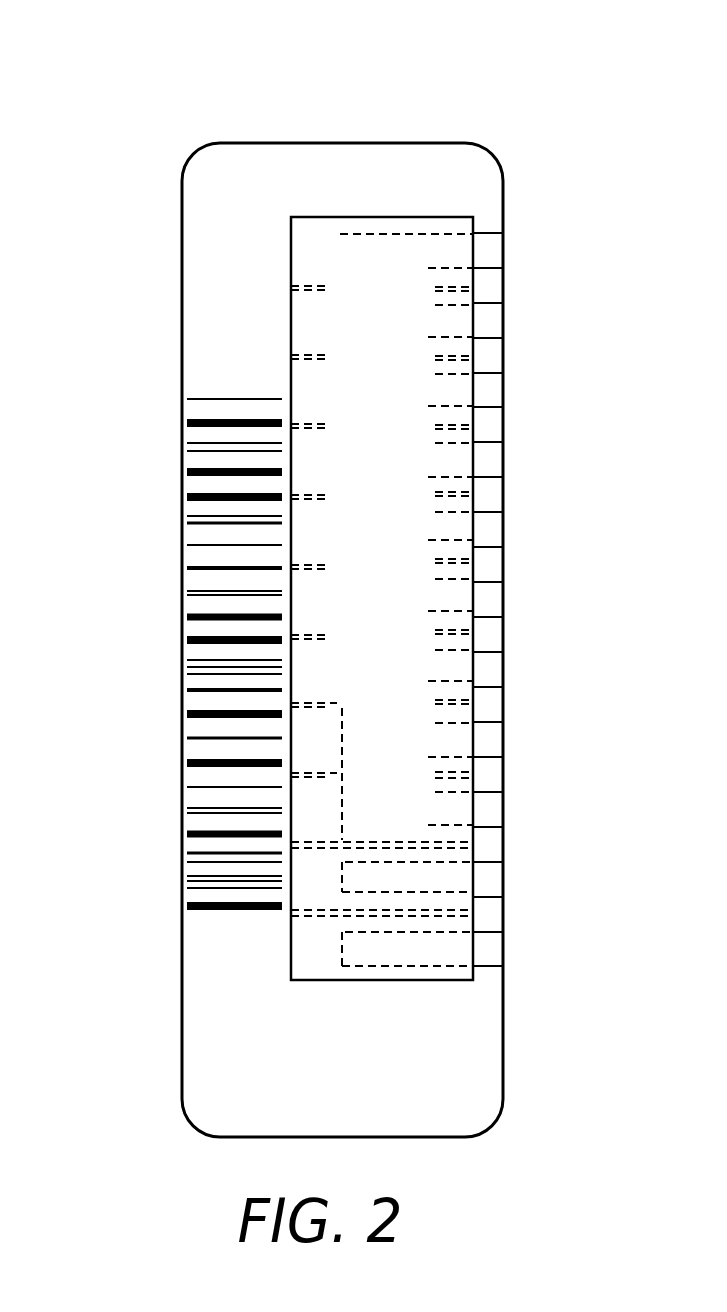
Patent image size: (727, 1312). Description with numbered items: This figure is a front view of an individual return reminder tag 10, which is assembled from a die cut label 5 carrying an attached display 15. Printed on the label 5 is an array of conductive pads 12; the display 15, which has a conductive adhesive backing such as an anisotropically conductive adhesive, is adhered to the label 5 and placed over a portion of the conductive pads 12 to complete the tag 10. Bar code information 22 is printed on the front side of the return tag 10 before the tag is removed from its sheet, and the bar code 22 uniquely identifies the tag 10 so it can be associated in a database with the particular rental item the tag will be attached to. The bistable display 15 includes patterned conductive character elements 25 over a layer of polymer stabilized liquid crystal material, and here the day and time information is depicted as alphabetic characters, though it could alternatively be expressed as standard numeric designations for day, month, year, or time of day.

The return reminder tag 10 is at (182, 117).
The conductive pads 12 is at (488, 252).
The display 15 is at (290, 383).
The bar code 22 is at (185, 502).
The patterned conductive character elements 25 is at (418, 461).
The die cut label 5 is at (182, 896).